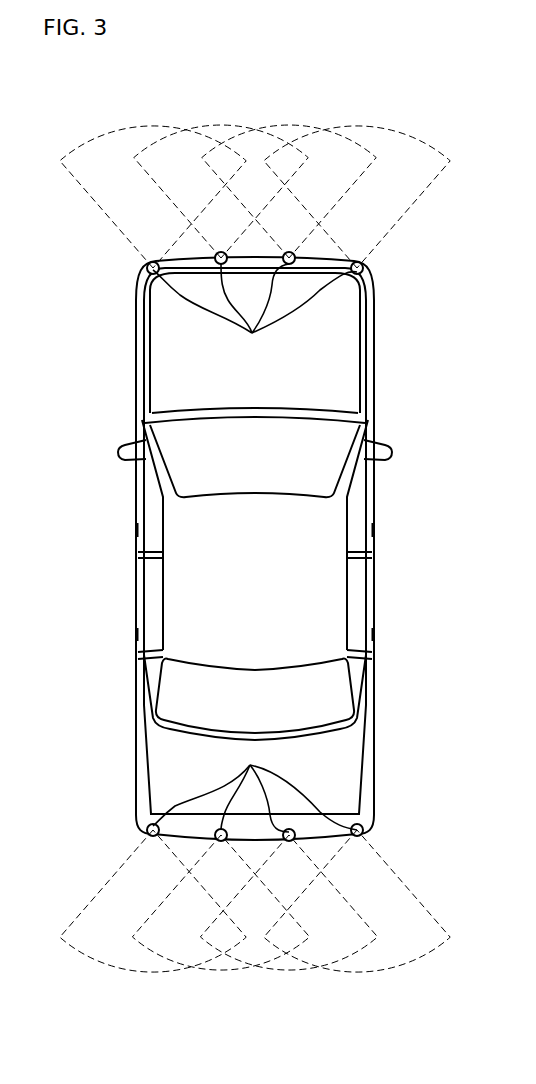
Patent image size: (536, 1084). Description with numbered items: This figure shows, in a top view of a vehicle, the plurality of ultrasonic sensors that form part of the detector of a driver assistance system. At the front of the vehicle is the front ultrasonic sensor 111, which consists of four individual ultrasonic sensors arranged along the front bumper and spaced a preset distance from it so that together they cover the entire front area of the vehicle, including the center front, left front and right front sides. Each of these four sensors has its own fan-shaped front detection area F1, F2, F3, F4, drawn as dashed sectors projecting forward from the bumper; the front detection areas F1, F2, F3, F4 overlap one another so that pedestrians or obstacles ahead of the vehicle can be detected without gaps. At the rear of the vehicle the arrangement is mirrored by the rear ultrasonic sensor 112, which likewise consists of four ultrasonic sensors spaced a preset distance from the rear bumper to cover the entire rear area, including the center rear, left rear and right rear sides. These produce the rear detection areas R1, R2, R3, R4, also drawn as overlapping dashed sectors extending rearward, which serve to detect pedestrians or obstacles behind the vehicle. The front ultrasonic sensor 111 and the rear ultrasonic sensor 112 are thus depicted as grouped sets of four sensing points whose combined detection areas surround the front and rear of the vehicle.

The front detection area F1 is at (155, 127).
The front detection area F2 is at (221, 125).
The front detection area F3 is at (289, 125).
The front detection area F4 is at (356, 127).
The rear detection area R1 is at (155, 975).
The rear detection area R2 is at (221, 973).
The rear detection area R3 is at (289, 973).
The rear detection area R4 is at (356, 975).
The front ultrasonic sensor 111 is at (255, 312).
The rear ultrasonic sensor 112 is at (255, 785).